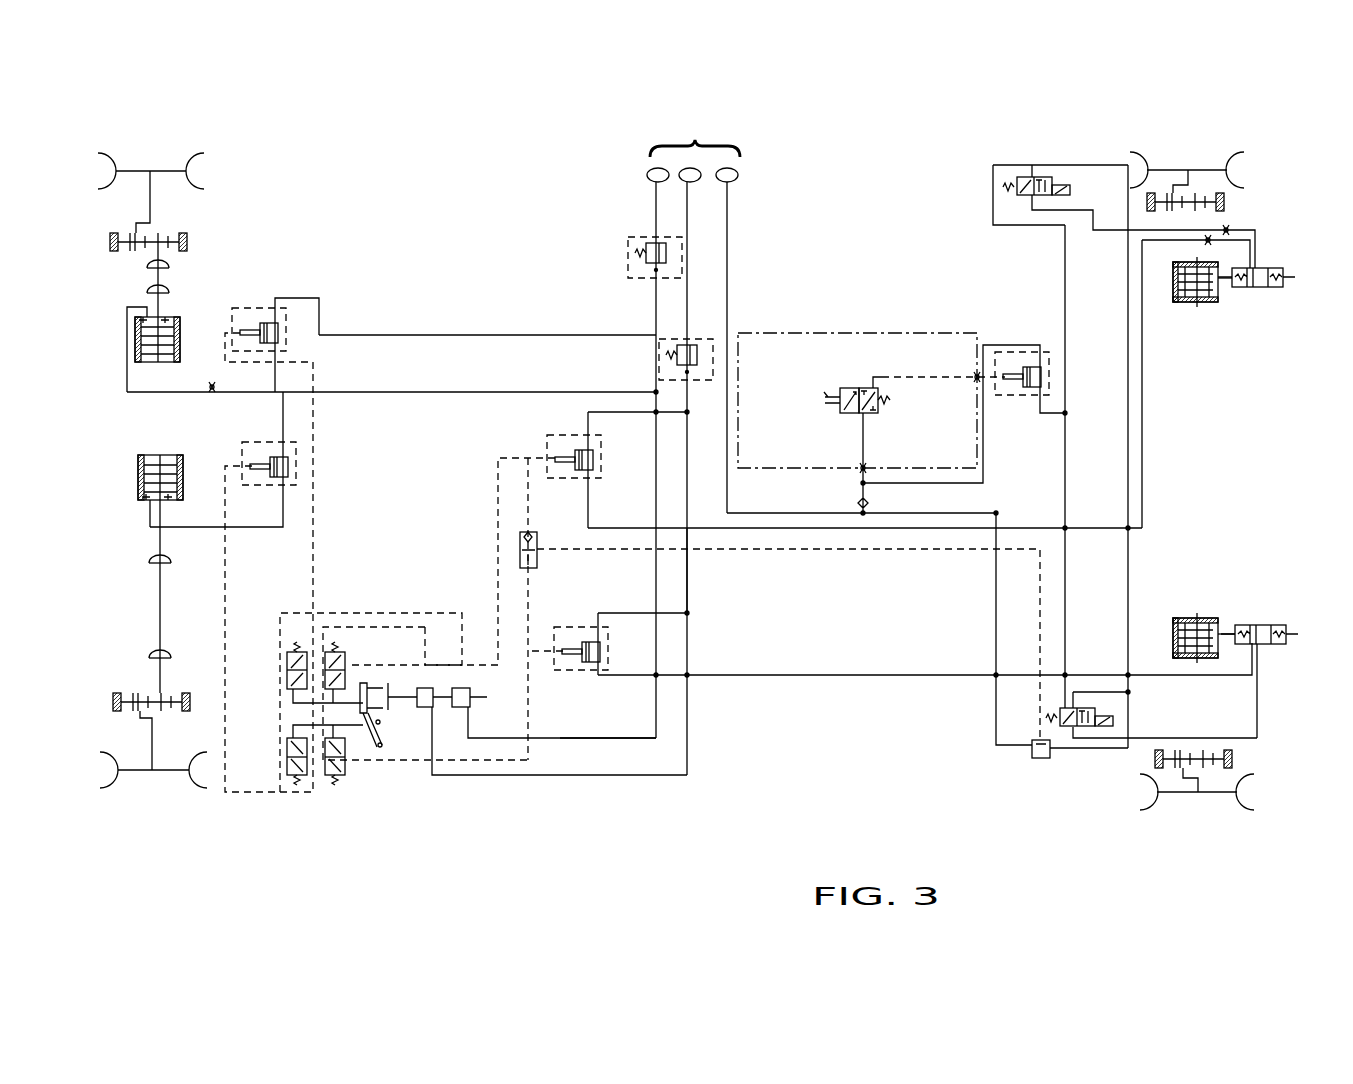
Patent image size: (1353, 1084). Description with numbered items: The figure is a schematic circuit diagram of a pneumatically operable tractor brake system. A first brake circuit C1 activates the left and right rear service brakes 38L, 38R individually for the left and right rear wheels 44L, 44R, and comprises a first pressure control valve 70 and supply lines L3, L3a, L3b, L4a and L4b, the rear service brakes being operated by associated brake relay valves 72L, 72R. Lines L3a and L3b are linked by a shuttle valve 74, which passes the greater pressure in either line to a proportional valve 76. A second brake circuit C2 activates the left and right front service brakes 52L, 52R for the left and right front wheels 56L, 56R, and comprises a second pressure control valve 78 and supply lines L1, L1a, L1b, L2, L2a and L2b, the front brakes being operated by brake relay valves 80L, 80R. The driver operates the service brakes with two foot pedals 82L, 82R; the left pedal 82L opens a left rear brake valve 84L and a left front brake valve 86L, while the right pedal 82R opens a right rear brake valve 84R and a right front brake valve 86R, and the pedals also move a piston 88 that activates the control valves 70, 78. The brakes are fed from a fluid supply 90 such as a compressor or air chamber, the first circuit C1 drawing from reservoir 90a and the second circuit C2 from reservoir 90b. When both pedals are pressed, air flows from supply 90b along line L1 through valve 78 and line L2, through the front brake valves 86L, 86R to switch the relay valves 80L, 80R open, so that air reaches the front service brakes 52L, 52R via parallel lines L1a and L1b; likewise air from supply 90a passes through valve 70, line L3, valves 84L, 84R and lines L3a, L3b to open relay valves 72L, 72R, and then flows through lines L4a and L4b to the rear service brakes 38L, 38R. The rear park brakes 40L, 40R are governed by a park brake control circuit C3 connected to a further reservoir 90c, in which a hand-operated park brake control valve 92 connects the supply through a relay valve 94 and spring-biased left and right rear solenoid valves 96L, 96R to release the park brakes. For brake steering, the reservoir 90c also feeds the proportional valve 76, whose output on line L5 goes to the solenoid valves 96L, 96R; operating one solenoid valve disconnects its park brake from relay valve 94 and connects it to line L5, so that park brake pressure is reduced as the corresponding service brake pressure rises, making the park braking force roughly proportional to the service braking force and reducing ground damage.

The right front wheel 56R is at (138, 171).
The left front wheel 56L is at (143, 771).
The right front service brake 52R is at (178, 338).
The left front service brake 52L is at (150, 483).
The right brake relay valve 80R is at (250, 316).
The left brake relay valve 80L is at (252, 456).
The supply line L1 is at (656, 300).
The supply line L1a is at (373, 396).
The supply line L1b is at (371, 336).
The supply line L2 is at (435, 613).
The supply line L2a is at (225, 592).
The supply line L2b is at (313, 541).
The supply line L3 is at (375, 627).
The supply line L3a is at (528, 695).
The supply line L3b is at (498, 523).
The supply line L4a is at (765, 675).
The supply line L4b is at (622, 528).
The proportional valve output line L5 is at (1128, 582).
The right brake relay valve 72R is at (560, 448).
The left brake relay valve 72L is at (571, 642).
The shuttle valve 74 is at (533, 543).
The first pressure control valve 70 is at (434, 708).
The second pressure control valve 78 is at (472, 697).
The piston 88 is at (396, 698).
The right foot pedal 82R is at (378, 722).
The left foot pedal 82L is at (381, 747).
The right rear brake valve 84R is at (340, 652).
The left rear brake valve 84L is at (341, 777).
The right front brake valve 86R is at (287, 681).
The left front brake valve 86L is at (287, 766).
The first brake circuit C1 is at (687, 594).
The second brake circuit C2 is at (627, 740).
The park brake control circuit C3 is at (913, 515).
The fluid supply 90 is at (695, 133).
The fluid supply 90a is at (694, 178).
The fluid supply 90b is at (648, 176).
The reservoir 90c is at (738, 176).
The park brake control valve 92 is at (851, 387).
The relay valve 94 is at (1031, 397).
The right rear solenoid valve 96R is at (1047, 177).
The left rear solenoid valve 96L is at (1085, 728).
The right rear service brake 38R is at (1240, 288).
The left rear service brake 38L is at (1240, 625).
The right rear park brake 40R is at (1275, 288).
The left rear park brake 40L is at (1302, 610).
The right rear wheel 44R is at (1200, 170).
The left rear wheel 44L is at (1190, 795).
The proportional valve 76 is at (1040, 760).